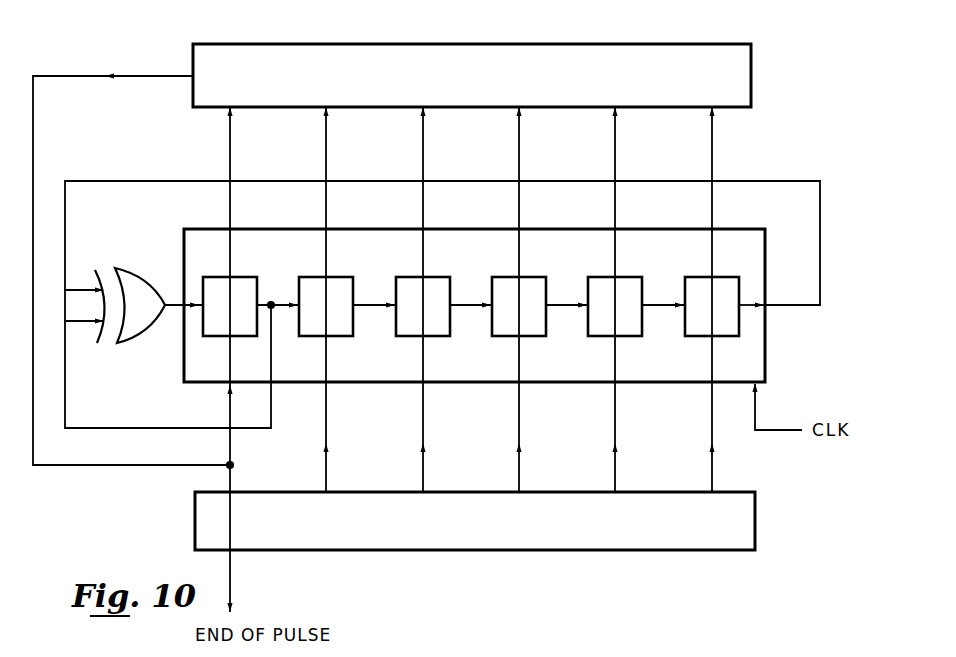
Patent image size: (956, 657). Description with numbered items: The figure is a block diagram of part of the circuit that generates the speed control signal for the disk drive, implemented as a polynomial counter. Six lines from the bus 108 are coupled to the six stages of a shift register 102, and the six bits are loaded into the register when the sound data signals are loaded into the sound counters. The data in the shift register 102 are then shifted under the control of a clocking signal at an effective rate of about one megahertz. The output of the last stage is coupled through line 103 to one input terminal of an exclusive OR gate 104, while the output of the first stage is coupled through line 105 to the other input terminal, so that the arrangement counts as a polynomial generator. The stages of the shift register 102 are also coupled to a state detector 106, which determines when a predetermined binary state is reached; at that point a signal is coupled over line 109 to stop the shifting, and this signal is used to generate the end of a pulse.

The shift register 102 is at (679, 229).
The line 103 is at (158, 181).
The exclusive OR gate 104 is at (141, 268).
The line 105 is at (118, 428).
The state detector 106 is at (312, 44).
The bus 108 is at (707, 534).
The line 109 is at (135, 468).